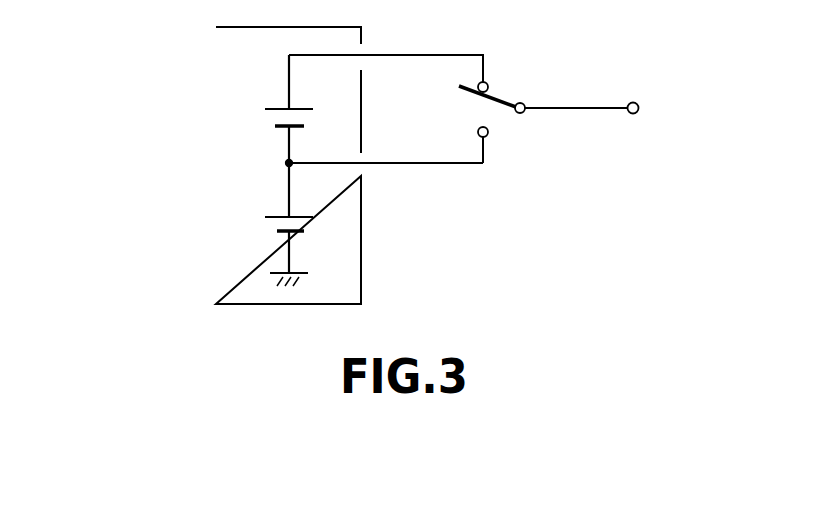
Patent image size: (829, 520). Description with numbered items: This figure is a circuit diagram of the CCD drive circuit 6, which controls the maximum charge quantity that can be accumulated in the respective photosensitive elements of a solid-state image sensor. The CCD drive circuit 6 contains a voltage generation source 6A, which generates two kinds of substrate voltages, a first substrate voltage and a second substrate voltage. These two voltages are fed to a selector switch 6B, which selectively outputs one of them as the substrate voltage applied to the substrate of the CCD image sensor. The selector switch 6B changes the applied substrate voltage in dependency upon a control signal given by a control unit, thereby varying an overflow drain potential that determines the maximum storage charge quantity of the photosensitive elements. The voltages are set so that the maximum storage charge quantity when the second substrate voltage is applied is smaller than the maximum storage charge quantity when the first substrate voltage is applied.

The CCD drive circuit 6 is at (175, 72).
The voltage generation source 6A is at (214, 109).
The selector switch 6B is at (503, 98).